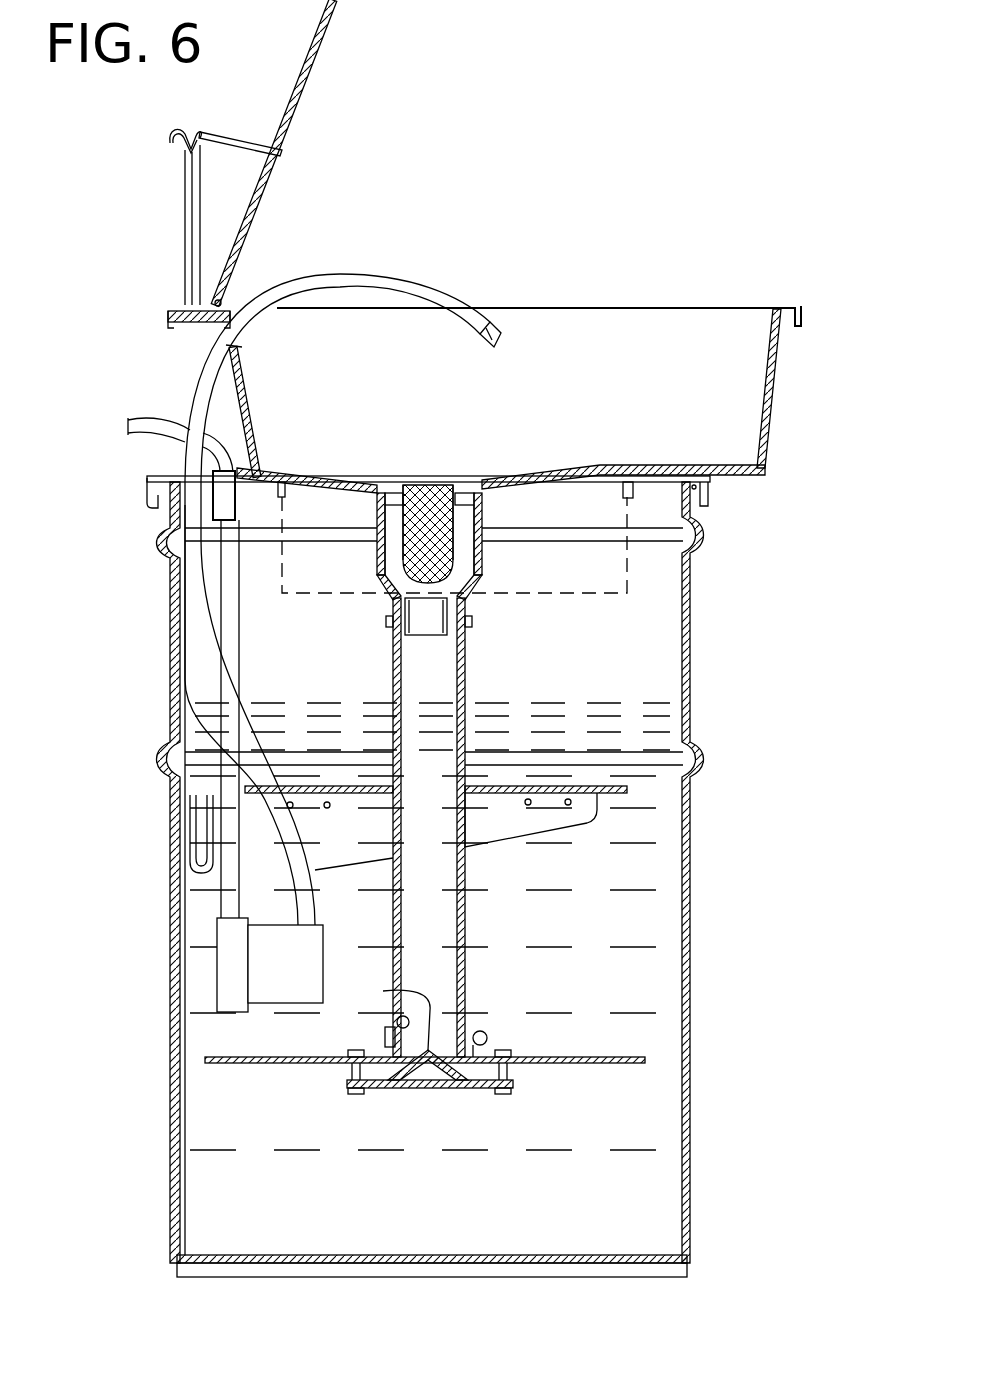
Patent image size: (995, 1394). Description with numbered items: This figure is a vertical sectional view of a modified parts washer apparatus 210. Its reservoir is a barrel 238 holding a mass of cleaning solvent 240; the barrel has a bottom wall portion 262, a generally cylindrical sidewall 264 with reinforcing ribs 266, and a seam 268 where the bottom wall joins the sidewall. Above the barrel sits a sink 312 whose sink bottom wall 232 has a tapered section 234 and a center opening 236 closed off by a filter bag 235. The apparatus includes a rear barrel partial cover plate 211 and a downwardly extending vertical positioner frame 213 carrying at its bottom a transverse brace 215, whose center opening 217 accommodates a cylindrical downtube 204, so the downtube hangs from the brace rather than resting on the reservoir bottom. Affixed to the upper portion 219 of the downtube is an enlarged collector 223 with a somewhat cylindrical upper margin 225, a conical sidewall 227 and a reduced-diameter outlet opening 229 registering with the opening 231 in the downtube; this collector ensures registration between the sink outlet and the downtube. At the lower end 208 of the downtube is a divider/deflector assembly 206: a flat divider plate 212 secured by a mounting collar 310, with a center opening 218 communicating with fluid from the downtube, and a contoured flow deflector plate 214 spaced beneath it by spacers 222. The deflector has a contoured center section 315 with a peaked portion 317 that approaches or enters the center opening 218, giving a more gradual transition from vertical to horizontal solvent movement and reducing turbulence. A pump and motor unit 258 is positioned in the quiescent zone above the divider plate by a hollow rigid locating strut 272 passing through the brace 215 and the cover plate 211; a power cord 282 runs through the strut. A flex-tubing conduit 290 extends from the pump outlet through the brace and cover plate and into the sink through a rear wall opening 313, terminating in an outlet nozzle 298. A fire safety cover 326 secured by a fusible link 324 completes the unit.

The downtube 204 is at (463, 686).
The divider/deflector assembly 206 is at (520, 1029).
The lower end of the downtube 208 is at (397, 1022).
The parts washer apparatus 210 is at (157, 386).
The rear barrel partial cover plate 211 is at (248, 469).
The divider plate 212 is at (240, 1065).
The vertical positioner frame 213 is at (203, 699).
The flow deflector plate 214 is at (398, 1084).
The transverse brace 215 is at (530, 805).
The center opening 217 is at (470, 795).
The center opening 218 is at (460, 1084).
The upper portion of the downtube 219 is at (388, 641).
The spacers 222 is at (350, 1068).
The enlarged collector 223 is at (490, 503).
The upper margin 225 is at (484, 537).
The conical sidewall 227 is at (470, 572).
The outlet opening 229 is at (445, 631).
The opening 231 is at (420, 628).
The sink bottom wall 232 is at (548, 466).
The tapered section 234 is at (360, 471).
The filter bag 235 is at (407, 527).
The center opening 236 is at (423, 485).
The barrel 238 is at (724, 700).
The cleaning solvent 240 is at (632, 929).
The pump and motor unit 258 is at (237, 960).
The bottom wall portion 262 is at (420, 1263).
The cylindrical sidewall 264 is at (692, 915).
The reinforcing ribs 266 is at (703, 762).
The seam 268 is at (178, 1265).
The locating strut 272 is at (237, 857).
The power cord 282 is at (157, 428).
The conduit 290 is at (297, 863).
The outlet nozzle 298 is at (500, 334).
The mounting collar 310 is at (478, 1031).
The sink 312 is at (587, 299).
The rear wall opening 313 is at (238, 349).
The contoured center section 315 is at (383, 1009).
The peaked portion 317 is at (430, 1072).
The fusible link 324 is at (282, 153).
The fire safety cover 326 is at (300, 100).